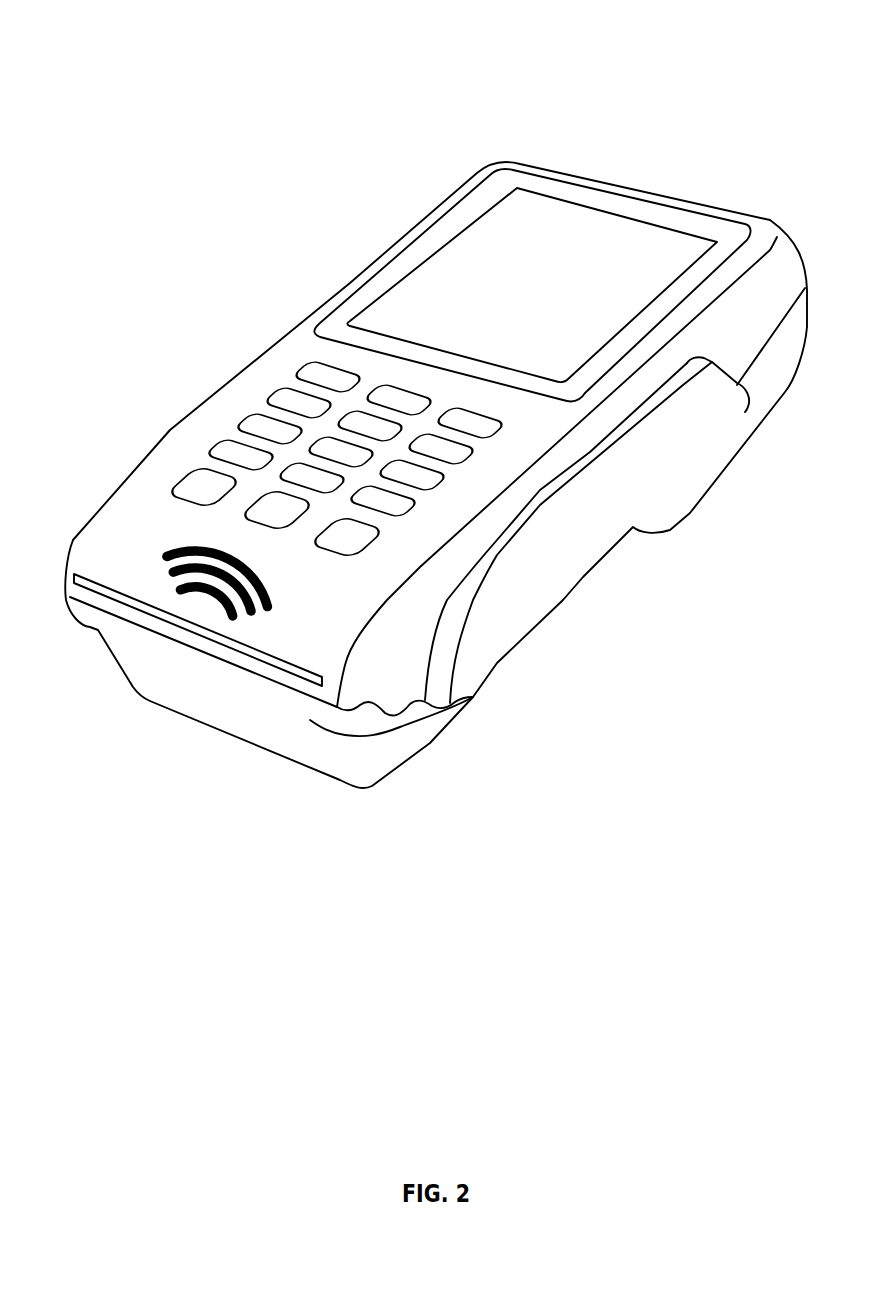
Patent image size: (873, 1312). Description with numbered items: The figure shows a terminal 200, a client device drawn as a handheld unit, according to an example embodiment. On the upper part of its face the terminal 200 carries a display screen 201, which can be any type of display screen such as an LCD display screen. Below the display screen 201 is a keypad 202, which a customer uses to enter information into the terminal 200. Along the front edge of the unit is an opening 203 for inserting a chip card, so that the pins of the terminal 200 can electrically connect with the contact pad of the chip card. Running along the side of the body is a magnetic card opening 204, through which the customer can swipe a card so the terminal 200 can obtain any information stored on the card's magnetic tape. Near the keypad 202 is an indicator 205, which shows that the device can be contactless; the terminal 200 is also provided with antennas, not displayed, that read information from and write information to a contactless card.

The terminal 200 is at (612, 161).
The display screen 201 is at (525, 218).
The keypad 202 is at (290, 357).
The opening 203 is at (195, 677).
The magnetic card opening 204 is at (440, 700).
The indicator 205 is at (147, 543).